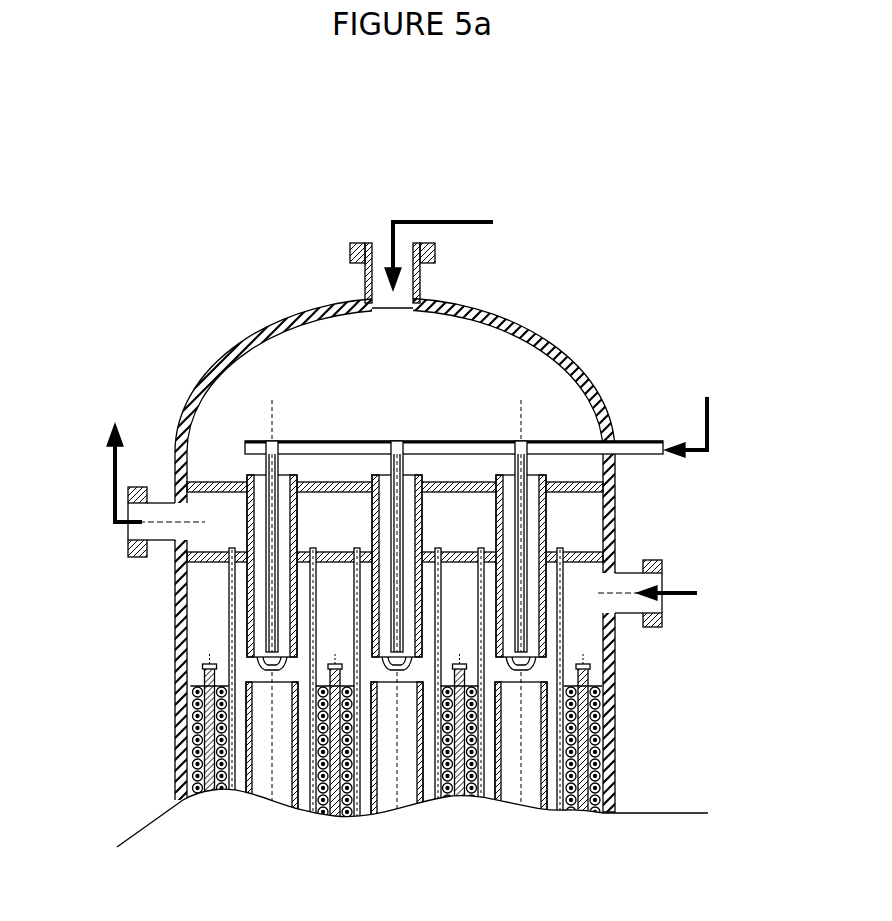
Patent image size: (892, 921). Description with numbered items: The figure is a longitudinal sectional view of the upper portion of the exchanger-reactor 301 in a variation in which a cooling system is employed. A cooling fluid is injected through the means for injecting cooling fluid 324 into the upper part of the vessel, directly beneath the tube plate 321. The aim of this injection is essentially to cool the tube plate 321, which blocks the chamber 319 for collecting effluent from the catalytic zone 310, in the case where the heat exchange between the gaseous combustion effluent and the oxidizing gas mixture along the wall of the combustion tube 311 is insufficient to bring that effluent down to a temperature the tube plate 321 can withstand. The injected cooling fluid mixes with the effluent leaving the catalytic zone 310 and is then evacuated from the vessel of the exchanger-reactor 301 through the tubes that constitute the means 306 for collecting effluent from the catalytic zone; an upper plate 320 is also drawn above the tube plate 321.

The exchanger-reactor 301 is at (640, 728).
The means for collecting effluent from the catalytic zone 306 is at (184, 767).
The catalytic zone 310 is at (187, 723).
The combustion tube 311 is at (247, 623).
The chamber for collecting effluent from the catalytic zone 319 is at (582, 625).
The upper tube sheet 320 is at (562, 482).
The tube plate 321 is at (218, 560).
The means for injecting cooling fluid 324 is at (660, 572).